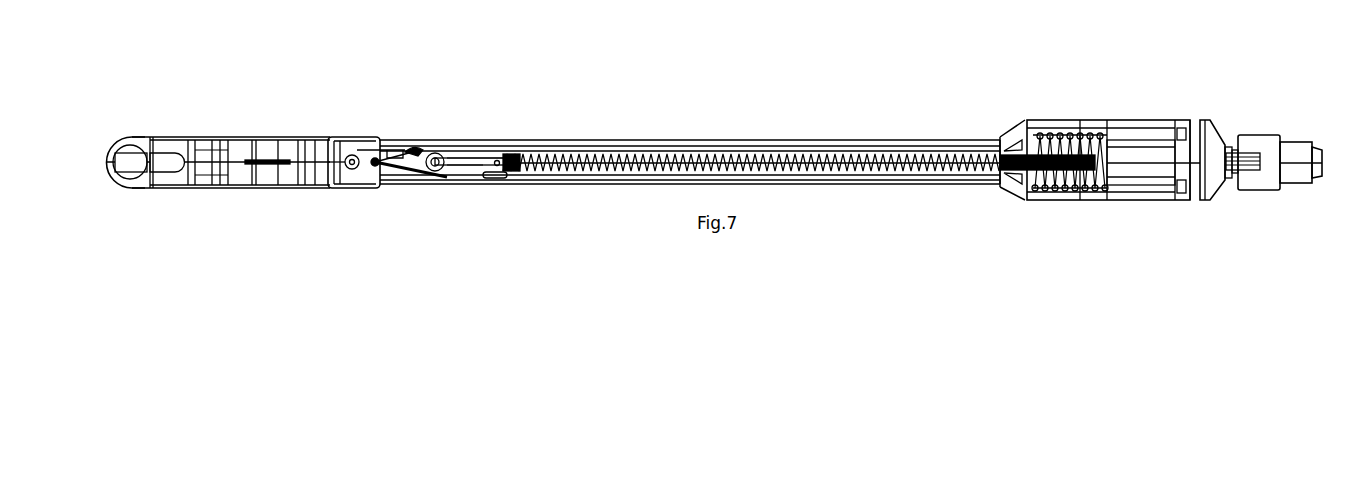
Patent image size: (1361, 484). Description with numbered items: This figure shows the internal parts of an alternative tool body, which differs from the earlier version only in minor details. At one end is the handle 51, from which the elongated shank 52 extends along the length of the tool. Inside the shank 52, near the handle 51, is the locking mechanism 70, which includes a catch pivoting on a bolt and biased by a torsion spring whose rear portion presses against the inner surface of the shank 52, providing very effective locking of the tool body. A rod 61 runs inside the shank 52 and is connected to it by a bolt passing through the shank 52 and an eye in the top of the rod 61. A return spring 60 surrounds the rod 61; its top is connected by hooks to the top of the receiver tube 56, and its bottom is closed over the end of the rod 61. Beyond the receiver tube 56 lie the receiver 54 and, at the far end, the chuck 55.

The handle 51 is at (127, 136).
The locking mechanism 70 is at (418, 130).
The shank 52 is at (562, 138).
The receiver tube 56 is at (767, 147).
The return spring 60 is at (637, 162).
The rod 61 is at (469, 162).
The receiver 54 is at (1217, 120).
The chuck 55 is at (1295, 140).